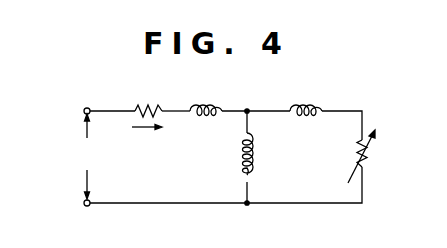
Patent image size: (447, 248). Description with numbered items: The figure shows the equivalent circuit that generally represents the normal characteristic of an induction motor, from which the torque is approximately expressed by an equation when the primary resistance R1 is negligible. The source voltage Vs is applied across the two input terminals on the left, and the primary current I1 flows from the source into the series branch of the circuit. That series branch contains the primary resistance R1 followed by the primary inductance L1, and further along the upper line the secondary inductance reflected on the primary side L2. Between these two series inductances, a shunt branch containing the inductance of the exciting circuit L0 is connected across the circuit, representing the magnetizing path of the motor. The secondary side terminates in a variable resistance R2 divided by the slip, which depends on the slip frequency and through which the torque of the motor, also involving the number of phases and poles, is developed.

The primary resistance R1 is at (152, 104).
The primary inductance L1 is at (208, 84).
The secondary inductance reflected on the primary side L2 is at (302, 84).
The inductance of the exciting circuit L0 is at (255, 142).
The secondary resistance divided by slip R2 is at (411, 169).
The source voltage Vs is at (87, 156).
The primary current I1 is at (156, 129).